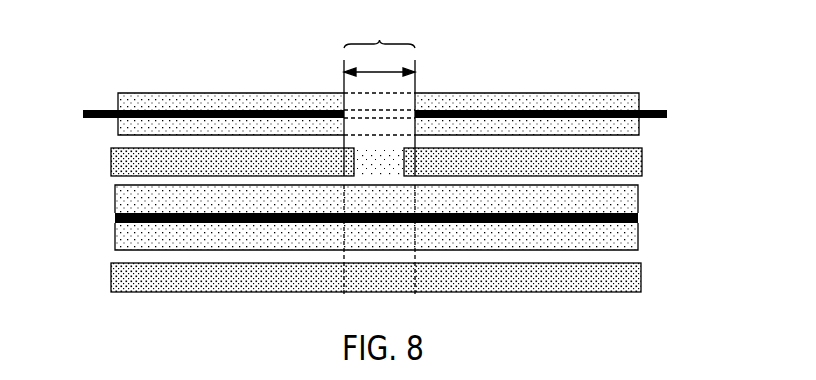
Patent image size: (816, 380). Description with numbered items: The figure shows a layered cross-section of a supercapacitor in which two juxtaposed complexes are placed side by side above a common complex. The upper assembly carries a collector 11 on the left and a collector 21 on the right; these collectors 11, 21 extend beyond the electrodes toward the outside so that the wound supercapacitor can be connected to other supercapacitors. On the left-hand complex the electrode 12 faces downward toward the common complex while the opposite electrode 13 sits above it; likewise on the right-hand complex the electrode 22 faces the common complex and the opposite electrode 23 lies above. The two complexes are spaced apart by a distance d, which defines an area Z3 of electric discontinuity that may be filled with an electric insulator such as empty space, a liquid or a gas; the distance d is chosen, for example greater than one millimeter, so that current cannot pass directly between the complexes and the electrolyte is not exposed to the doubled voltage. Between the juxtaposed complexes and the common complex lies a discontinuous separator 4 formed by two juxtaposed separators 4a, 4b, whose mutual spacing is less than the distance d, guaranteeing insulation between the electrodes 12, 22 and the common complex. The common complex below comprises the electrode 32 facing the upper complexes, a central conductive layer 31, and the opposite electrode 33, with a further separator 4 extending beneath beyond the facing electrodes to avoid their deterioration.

The collector 11 is at (88, 110).
The electrode 12 is at (118, 127).
The opposite electrode 13 is at (160, 98).
The collector 21 is at (662, 110).
The electrode 22 is at (634, 133).
The opposite electrode 23 is at (490, 98).
The separator 4 is at (138, 285).
The juxtaposed separator 4a is at (108, 162).
The juxtaposed separator 4b is at (644, 167).
The electrode layer 31 is at (116, 218).
The electrode 32 is at (116, 198).
The opposite electrode 33 is at (115, 243).
The area Z3 is at (379, 29).
The distance d is at (379, 62).